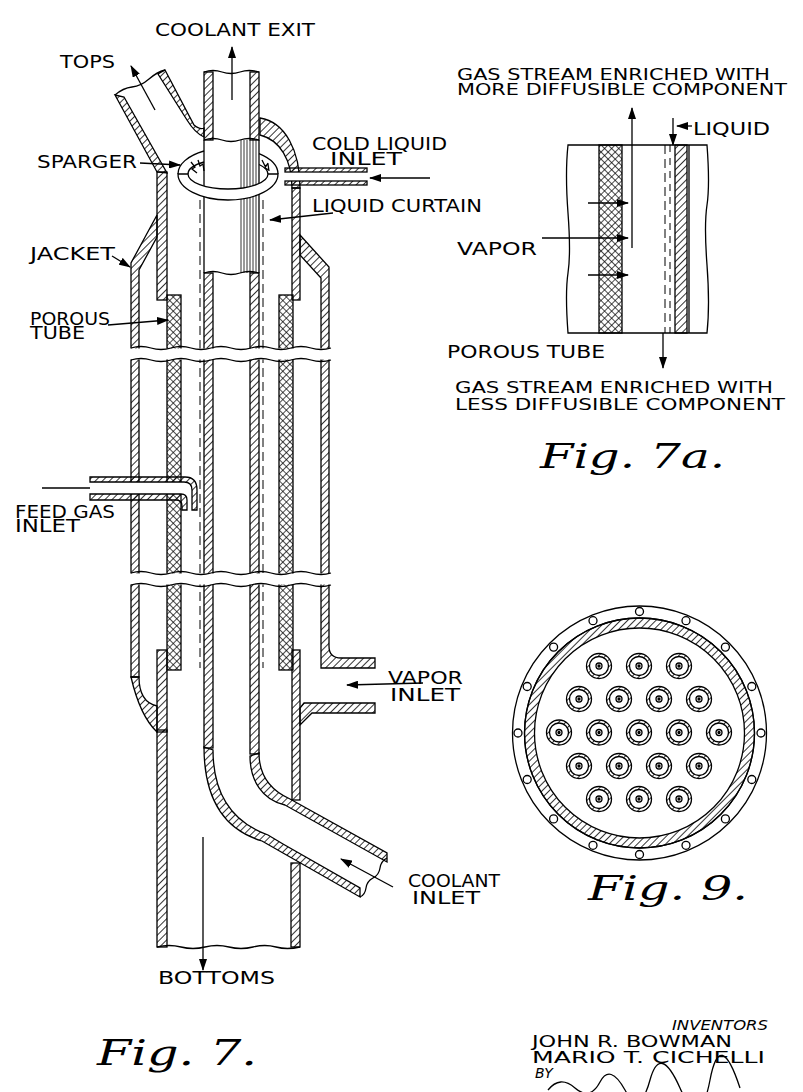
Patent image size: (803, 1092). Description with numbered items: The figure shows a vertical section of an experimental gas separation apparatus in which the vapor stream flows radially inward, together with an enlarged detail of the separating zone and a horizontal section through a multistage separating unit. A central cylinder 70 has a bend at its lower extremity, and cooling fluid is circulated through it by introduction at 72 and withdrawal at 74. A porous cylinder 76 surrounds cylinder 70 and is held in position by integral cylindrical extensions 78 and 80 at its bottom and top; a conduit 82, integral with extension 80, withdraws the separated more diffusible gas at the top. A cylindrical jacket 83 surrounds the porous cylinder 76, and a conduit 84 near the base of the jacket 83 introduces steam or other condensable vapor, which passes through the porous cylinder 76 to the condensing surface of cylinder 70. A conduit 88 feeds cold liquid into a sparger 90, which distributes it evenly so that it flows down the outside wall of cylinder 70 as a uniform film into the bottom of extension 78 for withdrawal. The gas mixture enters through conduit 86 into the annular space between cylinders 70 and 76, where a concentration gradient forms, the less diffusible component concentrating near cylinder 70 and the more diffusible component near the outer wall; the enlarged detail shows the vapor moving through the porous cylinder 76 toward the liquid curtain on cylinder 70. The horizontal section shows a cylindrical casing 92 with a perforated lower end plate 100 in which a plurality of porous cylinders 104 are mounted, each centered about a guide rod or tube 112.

In FIG. 7, the cylinder 70 is at (267, 327).
In FIG. 7A, the cylinder 70 is at (669, 320).
In FIG. 7, the cooling fluid introduction 72 is at (362, 842).
In FIG. 7, the cooling fluid withdrawal 74 is at (262, 82).
In FIG. 7, the porous cylinder 76 is at (293, 411).
In FIG. 7A, the porous cylinder 76 is at (600, 306).
In FIG. 7, the cylindrical extension 78 is at (301, 923).
In FIG. 7, the cylindrical extension 80 is at (302, 262).
In FIG. 7, the conduit 82 is at (127, 121).
In FIG. 7, the cylindrical jacket 83 is at (331, 497).
In FIG. 7, the conduit 84 is at (352, 665).
In FIG. 7, the conduit 86 is at (96, 477).
In FIG. 7, the conduit 88 is at (365, 184).
In FIG. 7, the sparger 90 is at (265, 158).
In FIG. 9, the cylindrical casing 92 is at (740, 793).
In FIG. 9, the lower end plate 100 is at (657, 626).
In FIG. 9, the porous cylinders 104 is at (668, 657).
In FIG. 9, the guide rods or tubes 112 is at (618, 776).